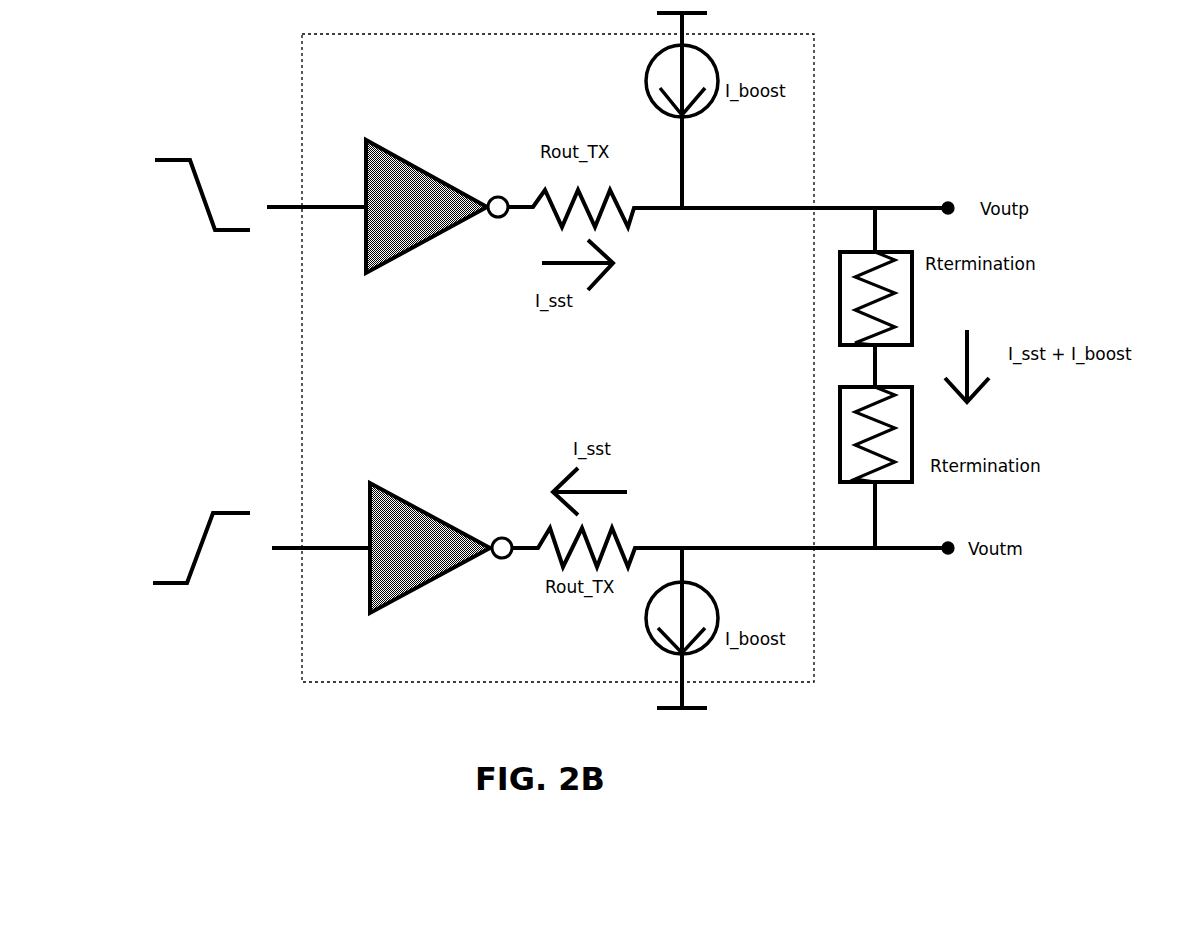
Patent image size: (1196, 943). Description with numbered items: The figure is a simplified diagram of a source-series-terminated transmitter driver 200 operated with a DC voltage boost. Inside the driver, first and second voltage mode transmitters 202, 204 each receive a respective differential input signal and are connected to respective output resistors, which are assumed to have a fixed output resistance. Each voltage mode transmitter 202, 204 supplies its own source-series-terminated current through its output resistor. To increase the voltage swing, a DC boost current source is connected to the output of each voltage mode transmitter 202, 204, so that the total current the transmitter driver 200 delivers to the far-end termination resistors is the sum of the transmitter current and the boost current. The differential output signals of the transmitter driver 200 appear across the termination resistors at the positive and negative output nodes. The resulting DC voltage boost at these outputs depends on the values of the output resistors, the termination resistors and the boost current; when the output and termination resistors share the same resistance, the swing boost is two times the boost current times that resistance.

The SST transmitter driver 200 is at (300, 112).
The first voltage mode transmitter 202 is at (425, 248).
The second voltage mode transmitter 204 is at (402, 490).